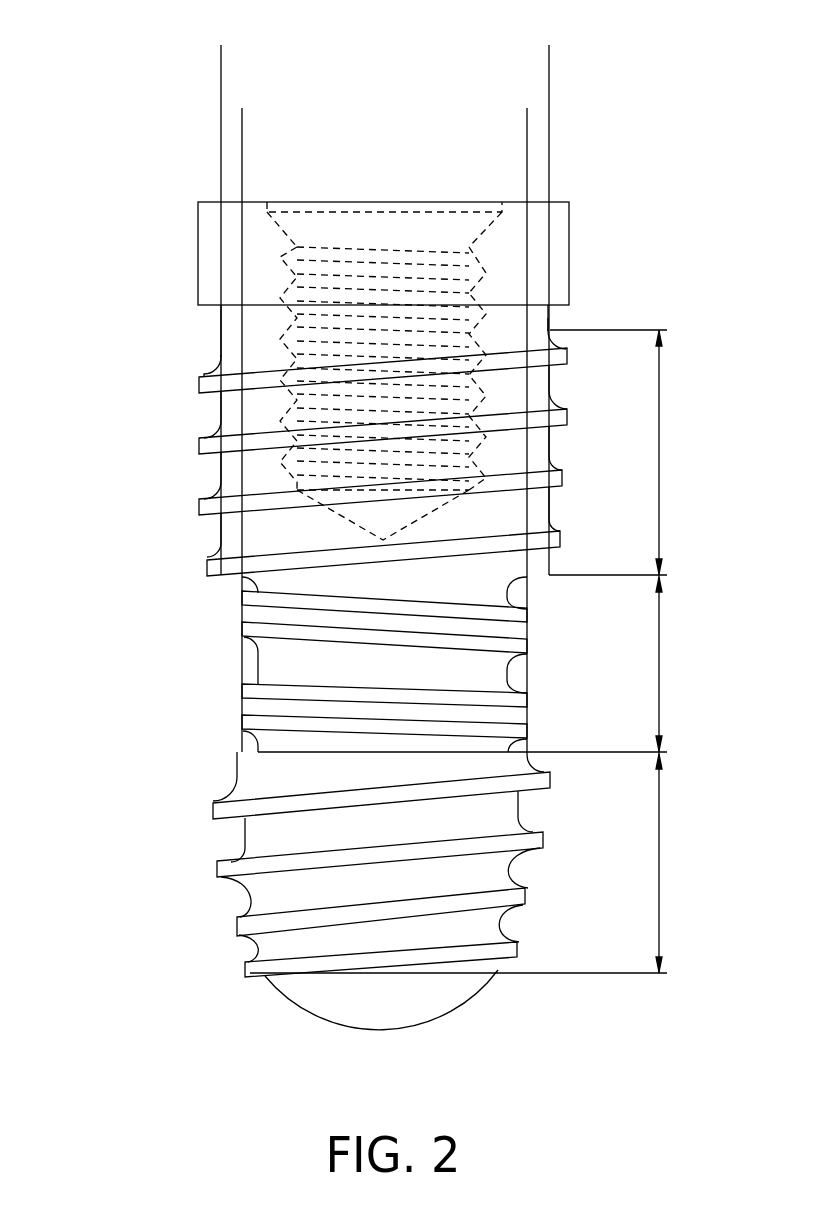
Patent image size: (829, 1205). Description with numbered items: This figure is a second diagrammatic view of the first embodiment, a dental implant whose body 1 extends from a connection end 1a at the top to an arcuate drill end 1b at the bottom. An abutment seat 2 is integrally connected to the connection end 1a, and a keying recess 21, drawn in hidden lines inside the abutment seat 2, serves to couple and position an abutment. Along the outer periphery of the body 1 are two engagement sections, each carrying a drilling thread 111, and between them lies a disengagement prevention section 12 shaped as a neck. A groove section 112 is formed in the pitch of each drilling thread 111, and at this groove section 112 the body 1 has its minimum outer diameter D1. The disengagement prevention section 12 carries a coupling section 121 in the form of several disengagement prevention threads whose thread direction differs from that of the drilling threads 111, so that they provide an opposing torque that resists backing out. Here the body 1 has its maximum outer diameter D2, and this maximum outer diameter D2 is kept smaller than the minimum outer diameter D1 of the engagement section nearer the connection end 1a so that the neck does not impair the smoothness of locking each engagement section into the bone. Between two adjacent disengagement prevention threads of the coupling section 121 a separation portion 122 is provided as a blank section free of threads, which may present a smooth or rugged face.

The body 1 is at (149, 820).
The connection end 1a is at (527, 317).
The drill end 1b is at (430, 1010).
The abutment seat 2 is at (613, 209).
The keying recess 21 is at (310, 236).
The drilling thread 111 is at (203, 505).
The groove section 112 is at (213, 540).
The disengagement prevention section 12 is at (388, 664).
The coupling section 121 is at (242, 627).
The separation portion 122 is at (233, 665).
The minimum outer diameter D1 is at (221, 52).
The maximum outer diameter D2 is at (242, 116).